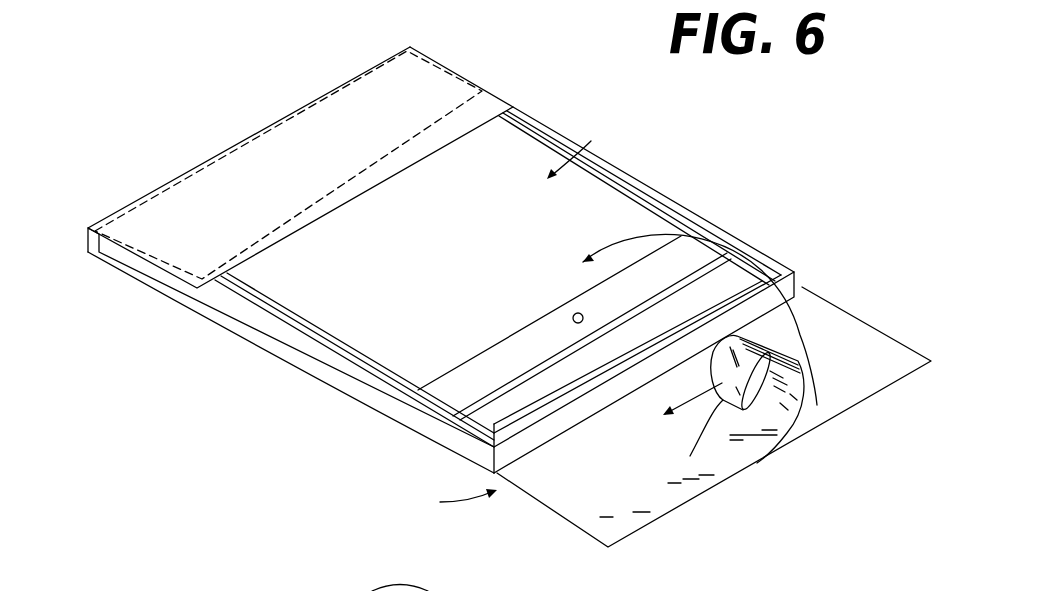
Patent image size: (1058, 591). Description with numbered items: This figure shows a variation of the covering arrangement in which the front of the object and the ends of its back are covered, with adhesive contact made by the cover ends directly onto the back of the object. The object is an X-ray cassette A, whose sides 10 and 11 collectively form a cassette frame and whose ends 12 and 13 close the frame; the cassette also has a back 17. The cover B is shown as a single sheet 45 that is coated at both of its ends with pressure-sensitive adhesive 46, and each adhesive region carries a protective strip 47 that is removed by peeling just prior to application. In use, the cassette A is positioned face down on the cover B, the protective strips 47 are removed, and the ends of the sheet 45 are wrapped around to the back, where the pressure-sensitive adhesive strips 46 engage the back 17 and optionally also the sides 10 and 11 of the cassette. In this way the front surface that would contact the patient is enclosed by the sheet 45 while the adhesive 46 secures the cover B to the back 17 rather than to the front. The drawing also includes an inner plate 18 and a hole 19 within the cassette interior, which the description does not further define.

The side 10 is at (365, 385).
The side 11 is at (647, 187).
The end 12 is at (233, 144).
The end 13 is at (613, 393).
The back 17 is at (327, 320).
The inner plate 18 is at (503, 363).
The hole 19 is at (576, 312).
The single sheet 45 is at (390, 427).
The pressure-sensitive adhesive 46 is at (482, 90).
The protective strip 47 is at (717, 393).
The X-ray cassette A is at (682, 260).
The cover B is at (454, 504).